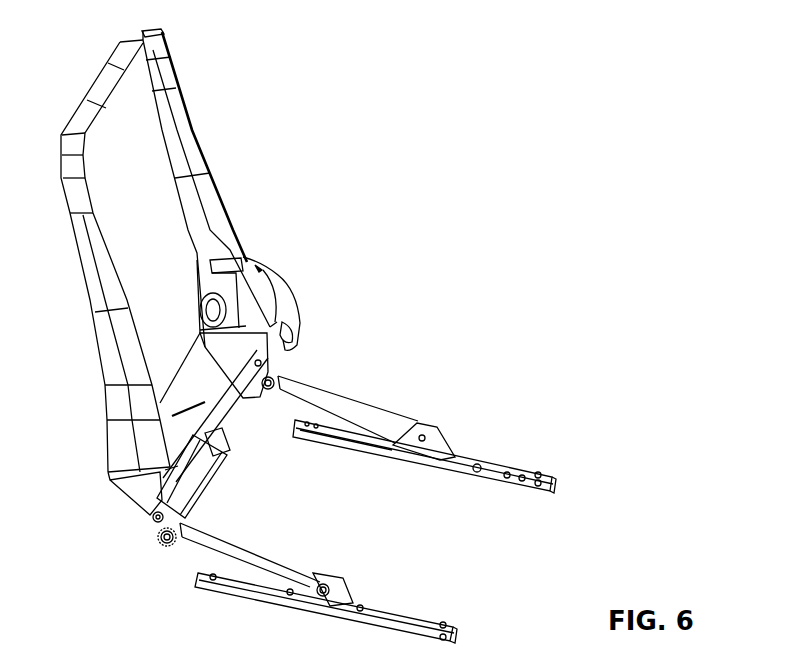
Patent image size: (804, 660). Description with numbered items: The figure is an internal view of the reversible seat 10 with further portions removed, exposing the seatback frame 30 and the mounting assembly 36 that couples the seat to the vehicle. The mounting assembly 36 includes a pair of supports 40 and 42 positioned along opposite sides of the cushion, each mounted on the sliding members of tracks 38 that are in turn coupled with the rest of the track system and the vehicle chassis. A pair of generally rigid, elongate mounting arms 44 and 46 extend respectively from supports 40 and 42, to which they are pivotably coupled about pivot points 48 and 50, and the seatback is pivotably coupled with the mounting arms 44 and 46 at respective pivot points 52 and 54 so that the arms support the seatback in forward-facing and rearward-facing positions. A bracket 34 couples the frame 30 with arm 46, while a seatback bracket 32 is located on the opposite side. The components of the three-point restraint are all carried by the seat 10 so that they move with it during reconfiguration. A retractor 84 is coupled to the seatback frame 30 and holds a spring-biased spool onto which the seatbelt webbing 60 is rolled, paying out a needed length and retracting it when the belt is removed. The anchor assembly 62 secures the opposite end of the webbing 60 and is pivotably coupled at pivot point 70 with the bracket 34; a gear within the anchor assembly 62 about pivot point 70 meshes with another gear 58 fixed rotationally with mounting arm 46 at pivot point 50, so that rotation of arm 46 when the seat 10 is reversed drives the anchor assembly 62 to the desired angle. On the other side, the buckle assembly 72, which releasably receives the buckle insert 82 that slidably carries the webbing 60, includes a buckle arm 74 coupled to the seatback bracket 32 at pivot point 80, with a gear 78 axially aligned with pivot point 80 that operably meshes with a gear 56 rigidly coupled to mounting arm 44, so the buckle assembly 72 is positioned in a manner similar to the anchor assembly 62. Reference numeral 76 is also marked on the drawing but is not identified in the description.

The seat 10 is at (424, 181).
The seatback frame 30 is at (212, 192).
The seatback bracket 32 is at (132, 488).
The bracket 34 is at (262, 348).
The mounting assembly 36 is at (378, 375).
The tracks 38 is at (534, 469).
The support 40 is at (342, 592).
The support 42 is at (440, 445).
The mounting arm 44 is at (267, 571).
The mounting arm 46 is at (386, 402).
The pivot point 48 is at (319, 599).
The pivot point 50 is at (423, 423).
The pivot point 52 is at (161, 546).
The pivot point 54 is at (257, 400).
The gear 56 is at (177, 529).
The gear 58 is at (270, 392).
The seatbelt webbing 60 is at (288, 292).
The anchor assembly 62 is at (312, 322).
The pivot point 70 is at (264, 365).
The buckle assembly 72 is at (236, 473).
The buckle arm 74 is at (194, 481).
The motor cap 76 is at (214, 434).
The gear 78 is at (152, 511).
The pivot point 80 is at (158, 531).
The buckle insert 82 is at (273, 267).
The retractor 84 is at (199, 289).